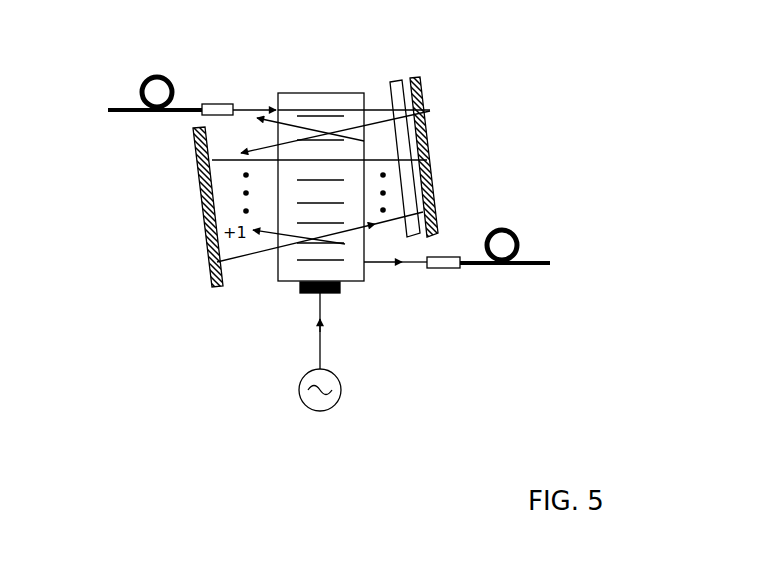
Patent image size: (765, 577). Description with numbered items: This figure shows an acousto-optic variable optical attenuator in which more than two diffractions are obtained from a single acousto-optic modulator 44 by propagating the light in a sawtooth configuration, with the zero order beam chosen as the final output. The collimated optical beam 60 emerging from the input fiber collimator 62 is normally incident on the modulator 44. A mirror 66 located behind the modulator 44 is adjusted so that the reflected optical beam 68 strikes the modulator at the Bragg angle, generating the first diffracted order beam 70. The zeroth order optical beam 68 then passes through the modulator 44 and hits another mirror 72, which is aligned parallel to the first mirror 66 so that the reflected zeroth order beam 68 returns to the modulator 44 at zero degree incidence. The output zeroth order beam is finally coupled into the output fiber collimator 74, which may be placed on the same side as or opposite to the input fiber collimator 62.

The acousto-optic modulator (AOM) 44 is at (348, 272).
The collimated optical beam 60 is at (263, 105).
The input fiber collimator 62 is at (138, 112).
The mirror 66 is at (418, 82).
The reflected optical beam 68 is at (375, 127).
The first diffracted order beam 70 is at (258, 118).
The mirror 72 is at (203, 232).
The output fiber collimator 74 is at (492, 263).